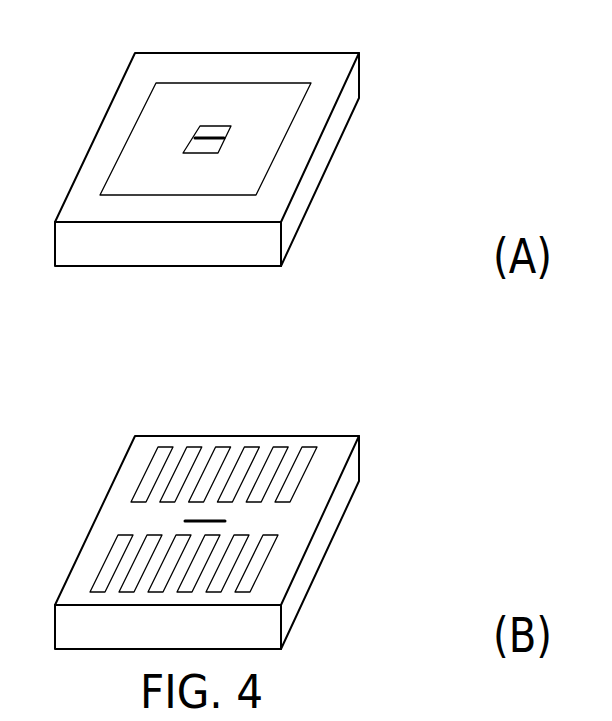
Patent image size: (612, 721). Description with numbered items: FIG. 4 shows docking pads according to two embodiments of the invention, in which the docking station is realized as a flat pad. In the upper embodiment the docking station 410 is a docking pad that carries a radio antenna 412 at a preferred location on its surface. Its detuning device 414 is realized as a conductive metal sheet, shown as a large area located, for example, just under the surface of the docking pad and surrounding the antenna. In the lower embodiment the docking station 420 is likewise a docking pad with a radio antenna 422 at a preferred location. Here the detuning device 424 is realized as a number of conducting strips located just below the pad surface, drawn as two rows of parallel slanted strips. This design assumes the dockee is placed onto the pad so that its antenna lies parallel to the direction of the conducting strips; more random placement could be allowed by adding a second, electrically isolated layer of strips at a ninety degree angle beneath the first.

The docking station 410 is at (135, 53).
The radio antenna 412 is at (212, 130).
The detuning device 414 is at (133, 127).
The docking station 420 is at (135, 436).
The radio antenna 422 is at (205, 520).
The detuning device 424 is at (308, 446).